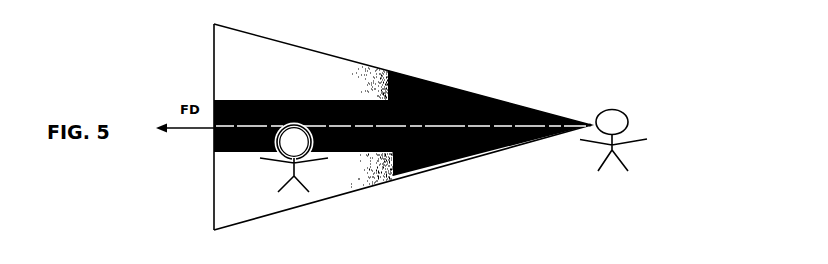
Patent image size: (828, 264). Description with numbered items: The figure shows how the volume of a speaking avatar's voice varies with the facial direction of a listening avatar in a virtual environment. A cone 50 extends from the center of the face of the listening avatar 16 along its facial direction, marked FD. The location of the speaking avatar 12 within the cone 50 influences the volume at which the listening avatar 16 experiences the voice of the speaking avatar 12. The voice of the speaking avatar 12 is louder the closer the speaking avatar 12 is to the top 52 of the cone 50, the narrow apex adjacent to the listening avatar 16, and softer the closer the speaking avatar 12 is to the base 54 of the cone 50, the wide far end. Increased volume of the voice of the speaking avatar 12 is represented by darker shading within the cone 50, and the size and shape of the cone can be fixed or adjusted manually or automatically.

The speaking avatar 12 is at (318, 173).
The listening avatar 16 is at (634, 118).
The cone 50 is at (412, 77).
The top of the cone 52 is at (590, 121).
The base of the cone 54 is at (213, 83).